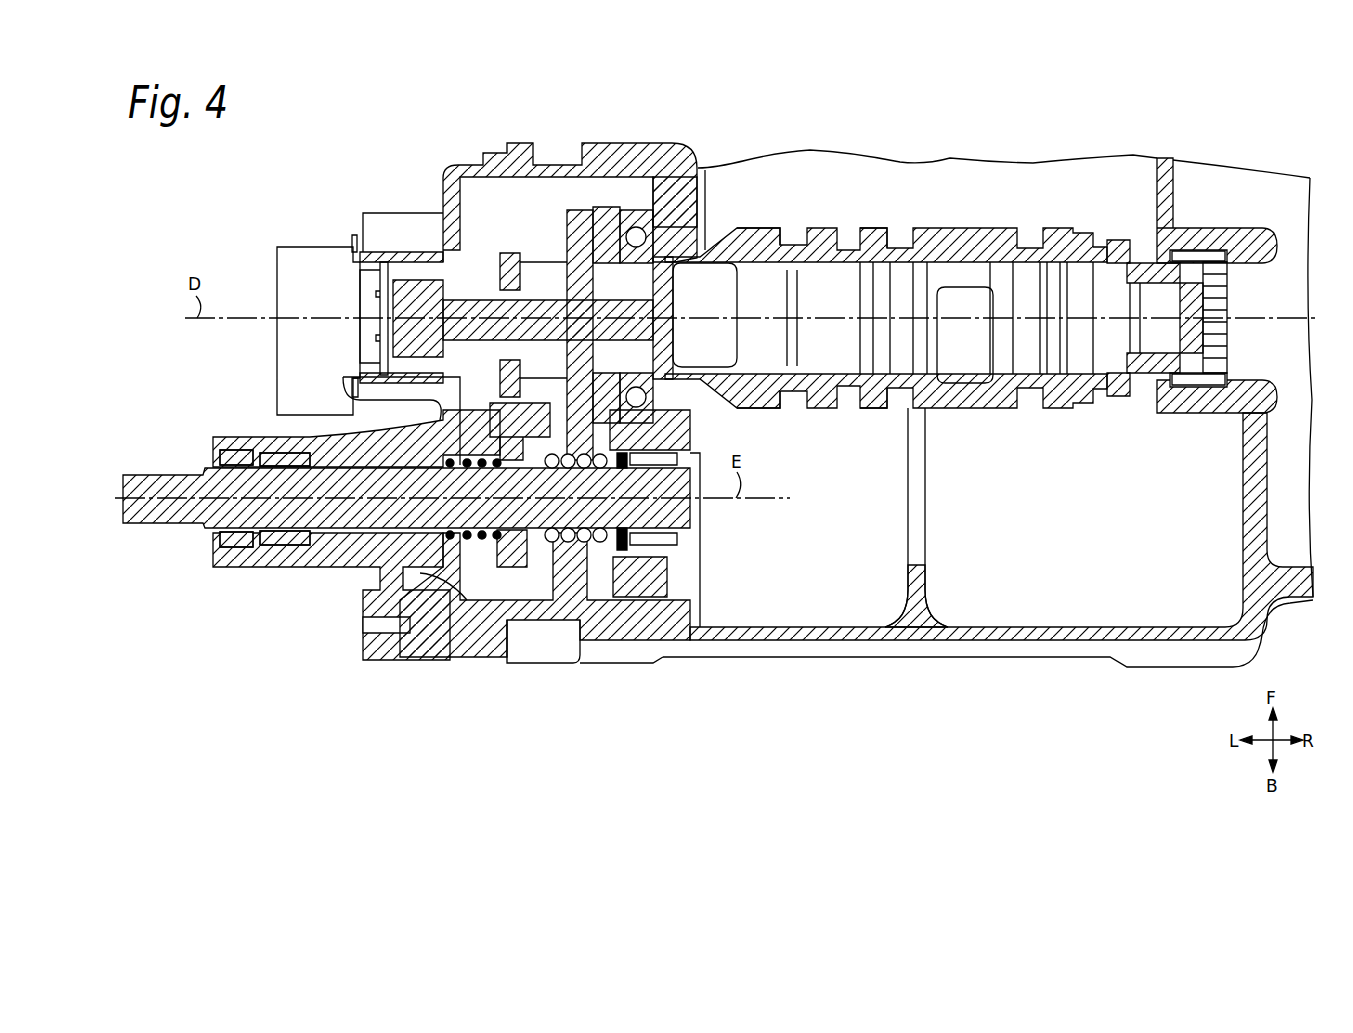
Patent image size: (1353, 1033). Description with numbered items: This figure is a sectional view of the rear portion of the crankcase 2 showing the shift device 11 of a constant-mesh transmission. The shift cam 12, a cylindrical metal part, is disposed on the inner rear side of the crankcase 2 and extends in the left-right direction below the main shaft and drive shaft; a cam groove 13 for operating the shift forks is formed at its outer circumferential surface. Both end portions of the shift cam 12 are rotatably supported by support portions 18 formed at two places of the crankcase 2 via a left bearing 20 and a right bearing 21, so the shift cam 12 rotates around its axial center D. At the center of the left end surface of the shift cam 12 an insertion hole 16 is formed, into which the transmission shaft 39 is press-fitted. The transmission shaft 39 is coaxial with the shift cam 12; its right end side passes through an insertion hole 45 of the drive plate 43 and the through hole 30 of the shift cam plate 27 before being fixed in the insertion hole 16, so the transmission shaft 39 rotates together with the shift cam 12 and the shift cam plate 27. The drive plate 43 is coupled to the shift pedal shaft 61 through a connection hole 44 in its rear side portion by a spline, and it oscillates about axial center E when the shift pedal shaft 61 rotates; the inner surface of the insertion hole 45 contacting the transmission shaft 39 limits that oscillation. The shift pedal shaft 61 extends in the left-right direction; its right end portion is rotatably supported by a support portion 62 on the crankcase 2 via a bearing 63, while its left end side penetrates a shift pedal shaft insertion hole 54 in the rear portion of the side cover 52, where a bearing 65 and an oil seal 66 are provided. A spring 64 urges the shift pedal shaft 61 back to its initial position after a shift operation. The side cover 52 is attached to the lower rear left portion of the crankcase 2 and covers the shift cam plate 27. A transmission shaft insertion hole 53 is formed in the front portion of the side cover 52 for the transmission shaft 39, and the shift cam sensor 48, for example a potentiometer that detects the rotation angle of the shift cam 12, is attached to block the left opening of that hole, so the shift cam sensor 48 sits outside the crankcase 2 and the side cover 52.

The crankcase 2 is at (1000, 640).
The shift device 11 is at (368, 170).
The shift cam 12 is at (962, 230).
The cam groove 13 is at (885, 228).
The insertion hole 16 is at (705, 255).
The support portions 18 is at (670, 228).
The left bearing 20 is at (632, 230).
The right bearing 21 is at (1208, 262).
The shift cam plate 27 is at (575, 255).
The through hole 30 is at (553, 258).
The transmission shaft 39 is at (400, 300).
The drive plate 43 is at (508, 258).
The connection hole 44 is at (490, 540).
The insertion hole 45 is at (478, 258).
The shift cam sensor 48 is at (305, 367).
The side cover 52 is at (420, 648).
The transmission shaft insertion hole 53 is at (370, 280).
The shift pedal shaft insertion hole 54 is at (213, 540).
The shift pedal shaft 61 is at (335, 510).
The support portion 62 is at (620, 550).
The bearing 63 is at (650, 547).
The spring 64 is at (570, 545).
The bearing 65 is at (275, 545).
The oil seal 66 is at (240, 547).